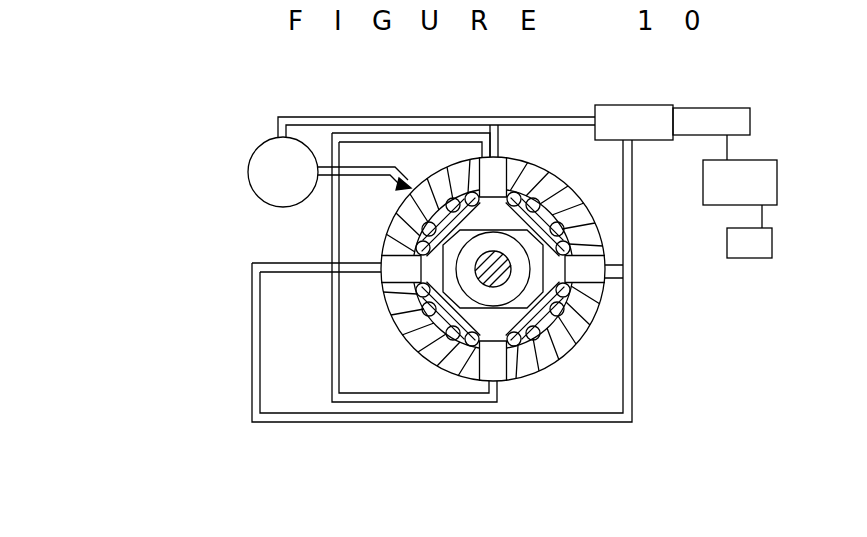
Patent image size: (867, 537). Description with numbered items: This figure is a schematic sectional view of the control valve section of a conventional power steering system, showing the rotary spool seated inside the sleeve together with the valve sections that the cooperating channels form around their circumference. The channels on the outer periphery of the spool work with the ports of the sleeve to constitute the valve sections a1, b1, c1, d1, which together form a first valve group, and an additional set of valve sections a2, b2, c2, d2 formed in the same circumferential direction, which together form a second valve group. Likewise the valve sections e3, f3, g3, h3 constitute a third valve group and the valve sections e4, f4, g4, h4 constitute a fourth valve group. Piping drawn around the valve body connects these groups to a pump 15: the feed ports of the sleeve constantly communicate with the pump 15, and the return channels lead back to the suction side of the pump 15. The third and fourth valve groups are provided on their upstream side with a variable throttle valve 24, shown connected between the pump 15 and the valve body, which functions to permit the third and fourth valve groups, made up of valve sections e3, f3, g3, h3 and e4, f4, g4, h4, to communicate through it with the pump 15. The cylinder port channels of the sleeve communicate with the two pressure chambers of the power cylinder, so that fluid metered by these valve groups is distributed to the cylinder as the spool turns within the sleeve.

The pump 15 is at (249, 173).
The variable throttle valve 24 is at (644, 115).
The valve section a1 is at (517, 182).
The valve section a2 is at (470, 336).
The valve section b1 is at (479, 188).
The valve section b2 is at (515, 346).
The valve section c1 is at (540, 205).
The valve section c2 is at (450, 328).
The valve section d1 is at (458, 198).
The valve section d2 is at (548, 325).
The valve section e3 is at (410, 240).
The valve section e4 is at (570, 290).
The valve section f3 is at (395, 310).
The valve section f4 is at (570, 248).
The valve section g3 is at (432, 208).
The valve section g4 is at (553, 304).
The valve section h3 is at (425, 315).
The valve section h4 is at (564, 236).